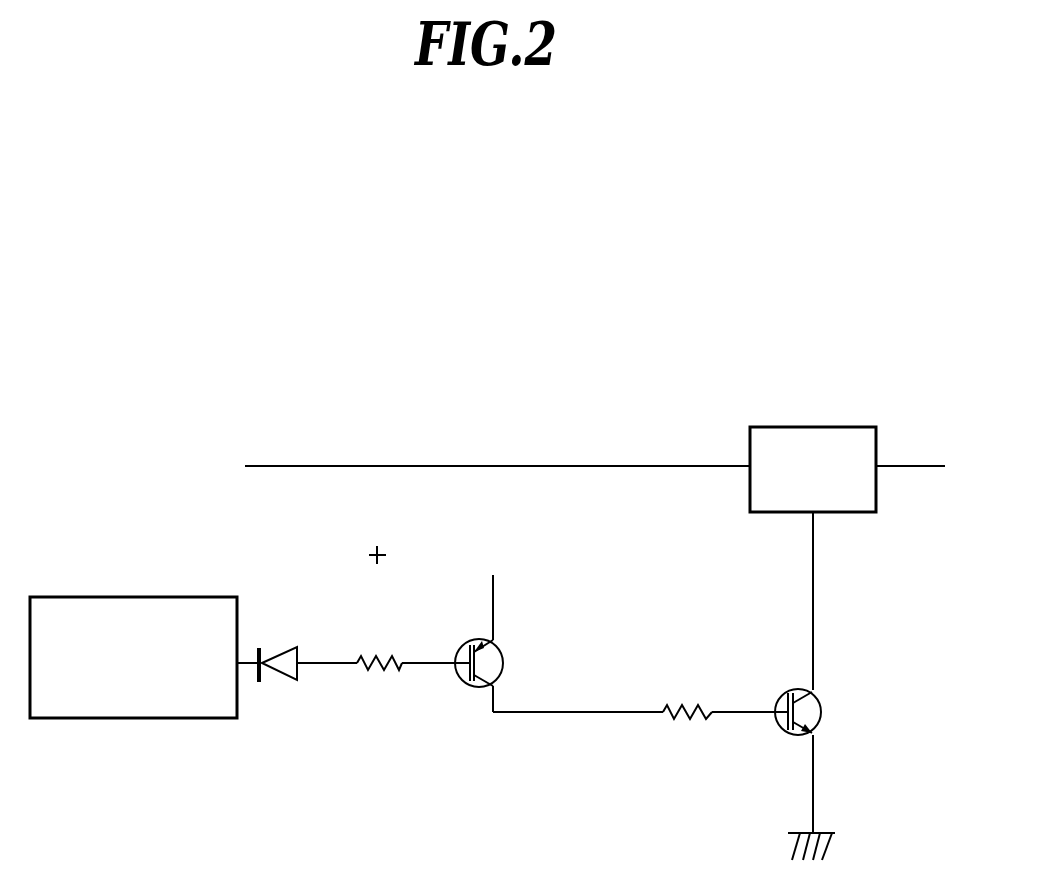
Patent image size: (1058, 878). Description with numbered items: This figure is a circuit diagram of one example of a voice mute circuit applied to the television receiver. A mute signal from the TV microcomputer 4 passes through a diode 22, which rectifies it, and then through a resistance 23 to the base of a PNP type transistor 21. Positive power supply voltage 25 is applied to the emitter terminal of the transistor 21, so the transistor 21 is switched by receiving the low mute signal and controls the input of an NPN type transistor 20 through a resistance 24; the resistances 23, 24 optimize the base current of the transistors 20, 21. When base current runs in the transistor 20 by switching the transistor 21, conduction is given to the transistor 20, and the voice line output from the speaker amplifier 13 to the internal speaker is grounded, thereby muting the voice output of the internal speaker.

The TV microcomputer 4 is at (212, 597).
The speaker amplifier 13 is at (878, 443).
The NPN type transistor 20 is at (820, 707).
The PNP type transistor 21 is at (495, 648).
The diode 22 is at (298, 648).
The resistance 23 is at (390, 655).
The resistance 24 is at (693, 703).
The positive power supply voltage 25 is at (595, 552).